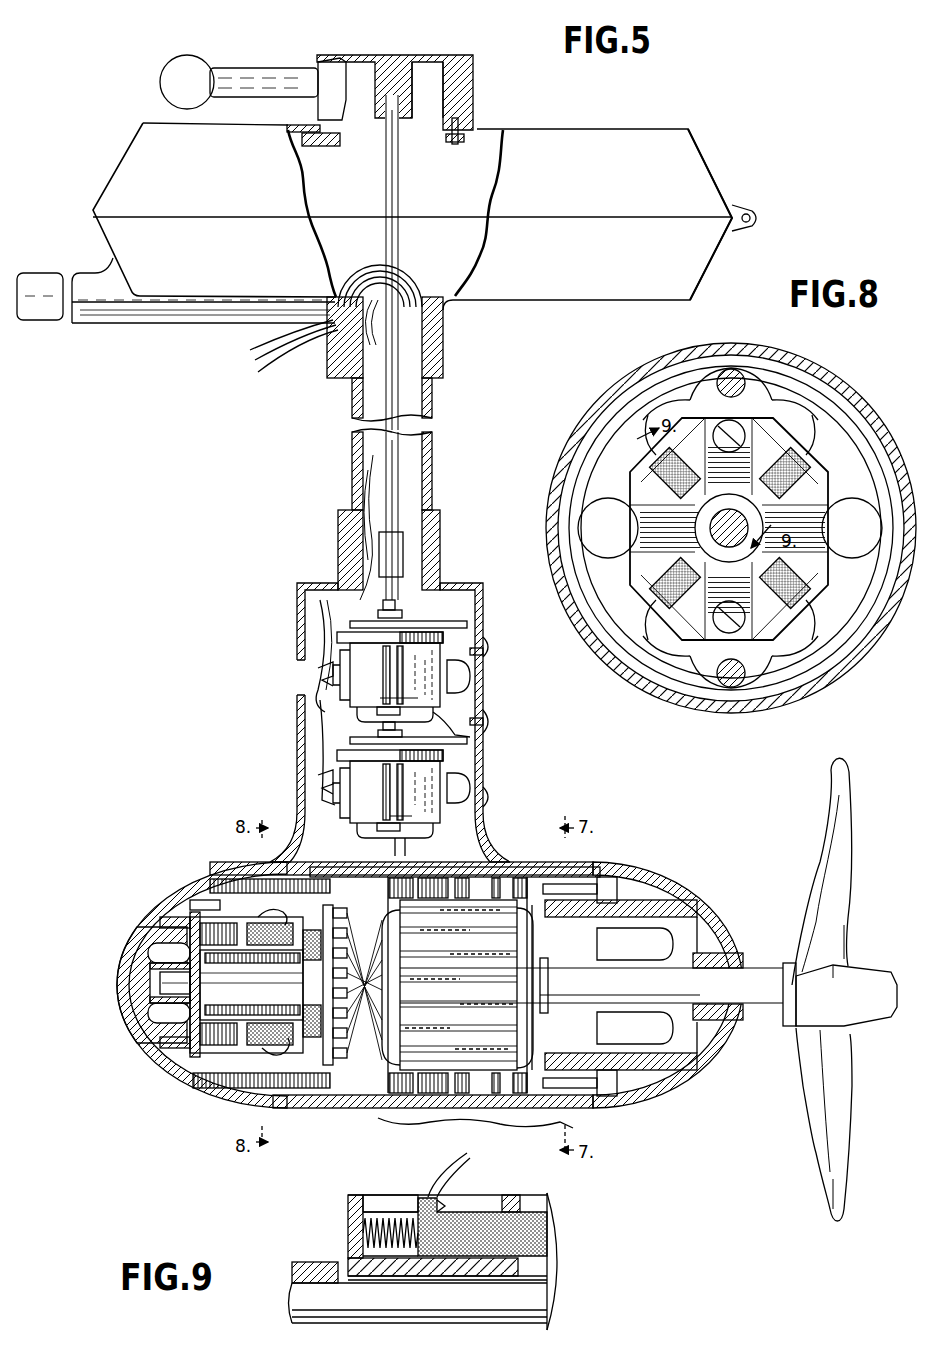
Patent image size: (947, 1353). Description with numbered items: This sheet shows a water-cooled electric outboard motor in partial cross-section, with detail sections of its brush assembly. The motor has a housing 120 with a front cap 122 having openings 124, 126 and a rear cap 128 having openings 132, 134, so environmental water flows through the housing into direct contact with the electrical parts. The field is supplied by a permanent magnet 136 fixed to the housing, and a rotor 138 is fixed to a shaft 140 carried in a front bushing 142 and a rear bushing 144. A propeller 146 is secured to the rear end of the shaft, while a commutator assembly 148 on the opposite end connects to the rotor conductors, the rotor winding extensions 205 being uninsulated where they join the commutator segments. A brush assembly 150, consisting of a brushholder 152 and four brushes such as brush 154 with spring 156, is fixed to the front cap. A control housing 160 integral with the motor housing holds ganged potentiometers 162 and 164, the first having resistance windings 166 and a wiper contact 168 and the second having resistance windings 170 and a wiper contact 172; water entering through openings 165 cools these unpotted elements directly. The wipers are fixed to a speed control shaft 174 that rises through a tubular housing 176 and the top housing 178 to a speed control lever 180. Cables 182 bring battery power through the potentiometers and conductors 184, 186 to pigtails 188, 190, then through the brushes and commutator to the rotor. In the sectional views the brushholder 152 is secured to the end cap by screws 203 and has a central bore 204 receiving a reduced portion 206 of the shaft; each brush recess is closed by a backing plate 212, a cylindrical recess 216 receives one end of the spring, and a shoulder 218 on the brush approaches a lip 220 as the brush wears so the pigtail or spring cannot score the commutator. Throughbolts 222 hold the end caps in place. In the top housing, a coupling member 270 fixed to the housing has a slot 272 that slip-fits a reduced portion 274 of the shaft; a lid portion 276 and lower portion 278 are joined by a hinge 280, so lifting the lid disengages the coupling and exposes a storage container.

In FIG. 5, the housing 120 is at (128, 900).
In FIG. 5, the front cap 122 is at (190, 1055).
In FIG. 8, the front cap 122 is at (718, 347).
In FIG. 5, the opening 124 is at (150, 950).
In FIG. 5, the opening 126 is at (150, 1013).
In FIG. 5, the rear cap 128 is at (717, 937).
In FIG. 5, the opening 132 is at (653, 940).
In FIG. 5, the opening 134 is at (650, 1032).
In FIG. 5, the permanent magnet 136 is at (490, 887).
In FIG. 5, the rotor 138 is at (375, 1067).
In FIG. 5, the shaft 140 is at (555, 977).
In FIG. 5, the front bushing 142 is at (160, 983).
In FIG. 5, the rear bushing 144 is at (737, 1027).
In FIG. 5, the propeller 146 is at (830, 926).
In FIG. 5, the commutator assembly 148 is at (320, 1068).
In FIG. 9, the commutator assembly 148 is at (562, 1215).
In FIG. 5, the brush assembly 150 is at (212, 1080).
In FIG. 5, the brushholder 152 is at (190, 912).
In FIG. 5, the brush 154 is at (227, 937).
In FIG. 8, the brush 154 is at (730, 528).
In FIG. 9, the brush 154 is at (490, 1212).
In FIG. 5, the spring 156 is at (200, 940).
In FIG. 9, the spring 156 is at (390, 1217).
In FIG. 5, the control housing 160 is at (293, 607).
In FIG. 5, the potentiometer 162 is at (455, 621).
In FIG. 5, the potentiometer 164 is at (438, 777).
In FIG. 5, the openings 165 is at (310, 658).
In FIG. 5, the resistance windings 166 is at (424, 698).
In FIG. 5, the rotatable wiper contact 168 is at (470, 737).
In FIG. 5, the resistance windings 170 is at (400, 810).
In FIG. 5, the rotatable wiper contact 172 is at (432, 837).
In FIG. 5, the speed control shaft 174 is at (397, 485).
In FIG. 5, the tubular housing 176 is at (430, 397).
In FIG. 5, the top housing 178 is at (558, 150).
In FIG. 5, the motor speed control lever 180 is at (243, 76).
In FIG. 5, the cables 182 is at (255, 378).
In FIG. 5, the conductor 184 is at (330, 707).
In FIG. 5, the conductor 186 is at (320, 797).
In FIG. 5, the pigtail 188 is at (258, 917).
In FIG. 9, the pigtail 188 is at (432, 1196).
In FIG. 5, the pigtail 190 is at (262, 1070).
In FIG. 5, the screws 203 is at (162, 923).
In FIG. 8, the screws 203 is at (740, 444).
In FIG. 5, the central bore 204 is at (246, 985).
In FIG. 8, the central bore 204 is at (738, 507).
In FIG. 5, the rotor winding extensions 205 is at (374, 905).
In FIG. 8, the reduced portion 206 is at (708, 529).
In FIG. 9, the backing plate 212 is at (348, 1200).
In FIG. 9, the cylindrical recess 216 is at (348, 1237).
In FIG. 9, the shoulder 218 is at (440, 1204).
In FIG. 9, the lip 220 is at (518, 1198).
In FIG. 5, the throughbolts 222 is at (612, 883).
In FIG. 8, the throughbolts 222 is at (720, 375).
In FIG. 5, the coupling member 270 is at (393, 95).
In FIG. 5, the slot 272 is at (400, 103).
In FIG. 5, the reduced portion 274 is at (390, 117).
In FIG. 5, the top lid portion 276 is at (663, 163).
In FIG. 5, the lower portion 278 is at (528, 282).
In FIG. 5, the hinge 280 is at (764, 203).